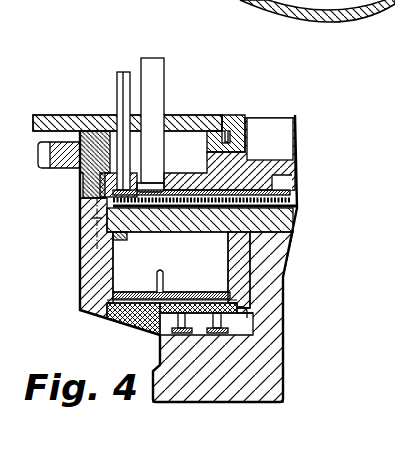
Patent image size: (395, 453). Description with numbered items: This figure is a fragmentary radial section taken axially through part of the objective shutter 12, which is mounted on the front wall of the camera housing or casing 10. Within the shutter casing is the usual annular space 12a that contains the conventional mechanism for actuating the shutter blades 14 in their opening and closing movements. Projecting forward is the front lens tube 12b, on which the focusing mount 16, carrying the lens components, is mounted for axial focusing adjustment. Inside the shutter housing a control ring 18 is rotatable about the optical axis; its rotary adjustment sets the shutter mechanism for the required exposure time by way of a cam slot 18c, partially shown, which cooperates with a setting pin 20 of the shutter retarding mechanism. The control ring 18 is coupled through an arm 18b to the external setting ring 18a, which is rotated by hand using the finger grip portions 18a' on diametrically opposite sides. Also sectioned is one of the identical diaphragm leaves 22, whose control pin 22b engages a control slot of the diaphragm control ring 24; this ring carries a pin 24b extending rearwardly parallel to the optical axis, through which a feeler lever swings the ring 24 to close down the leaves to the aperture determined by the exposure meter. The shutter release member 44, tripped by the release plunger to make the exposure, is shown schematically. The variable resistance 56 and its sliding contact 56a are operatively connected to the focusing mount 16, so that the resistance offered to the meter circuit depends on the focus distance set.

The housing or casing 10 is at (42, 118).
The objective shutter 12 is at (85, 243).
The annular space 12a is at (220, 256).
The front lens tube 12b is at (253, 274).
The shutter blades 14 is at (293, 208).
The focusing mount 16 is at (186, 393).
The control ring 18 is at (203, 293).
The external setting ring 18a is at (91, 139).
The finger grip portions 18a' is at (50, 172).
The arm 18b is at (86, 227).
The cam slot 18c is at (137, 296).
The setting pin 20 is at (156, 286).
The diaphragm leaf 22 is at (290, 192).
The control pin 22b is at (270, 139).
The control ring 24 is at (232, 175).
The pin 24b is at (153, 60).
The shutter release member 44 is at (117, 73).
The variable resistance 56 is at (252, 312).
The sliding contact 56a is at (183, 330).